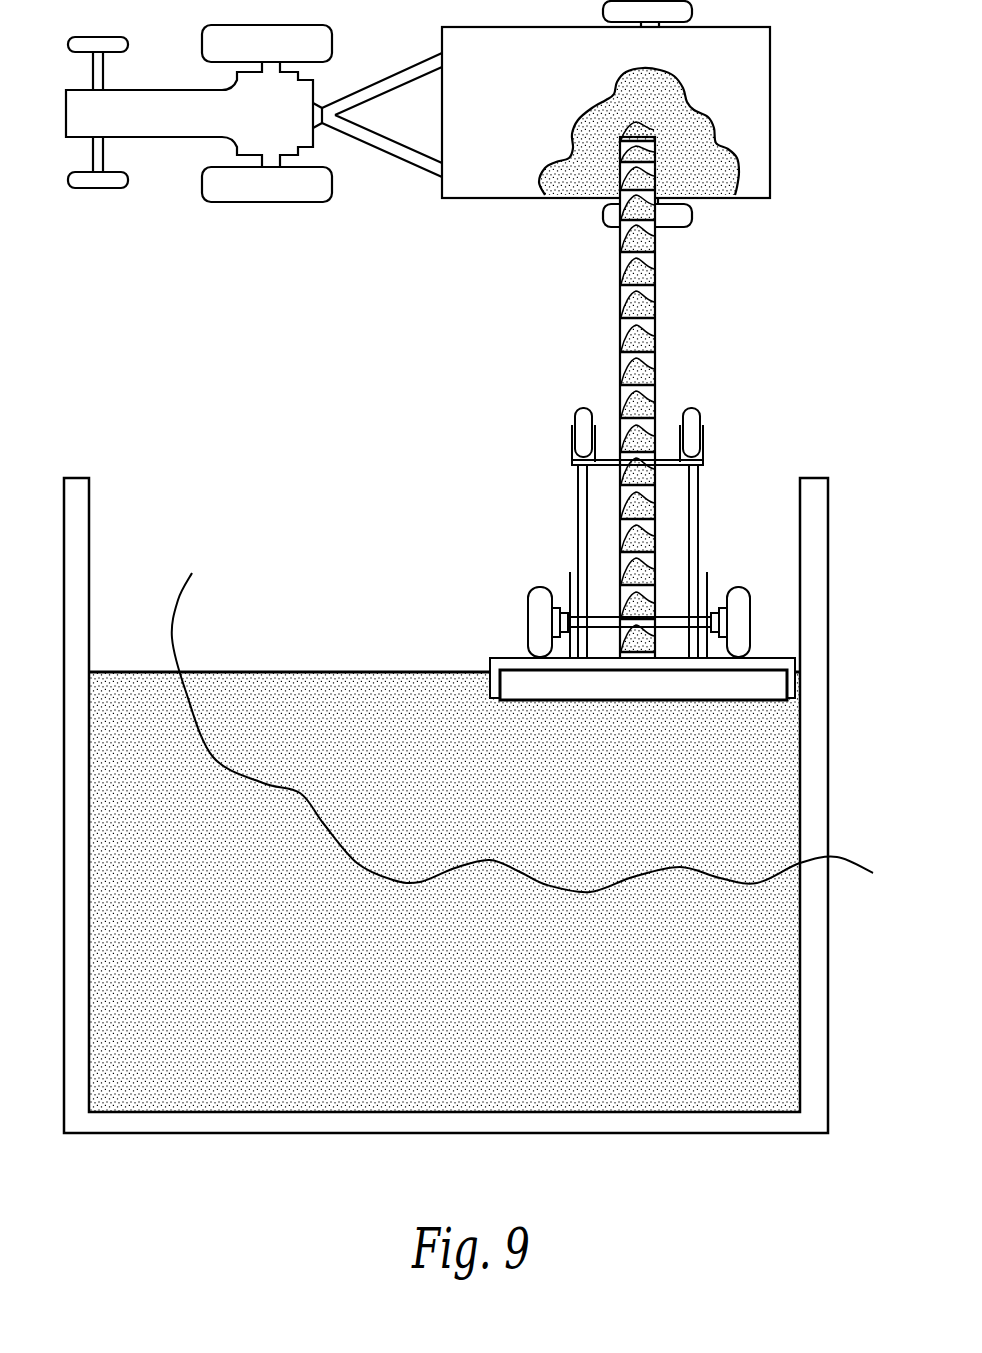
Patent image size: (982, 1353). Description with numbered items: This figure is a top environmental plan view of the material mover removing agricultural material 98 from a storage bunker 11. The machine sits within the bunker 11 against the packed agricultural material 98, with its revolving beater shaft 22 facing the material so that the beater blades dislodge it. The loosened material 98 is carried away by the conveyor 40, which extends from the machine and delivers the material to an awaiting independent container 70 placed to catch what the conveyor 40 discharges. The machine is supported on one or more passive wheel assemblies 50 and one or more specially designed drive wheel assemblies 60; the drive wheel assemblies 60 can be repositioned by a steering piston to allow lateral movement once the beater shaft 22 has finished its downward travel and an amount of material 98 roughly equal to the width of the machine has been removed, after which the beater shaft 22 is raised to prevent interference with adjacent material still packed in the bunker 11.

The storage bunker 11 is at (818, 577).
The beater shaft 22 is at (520, 682).
The conveyor 40 is at (643, 345).
The passive wheel assemblies 50 is at (580, 410).
The drive wheel assemblies 60 is at (543, 597).
The independent container 70 is at (747, 105).
The agricultural material 98 is at (365, 703).